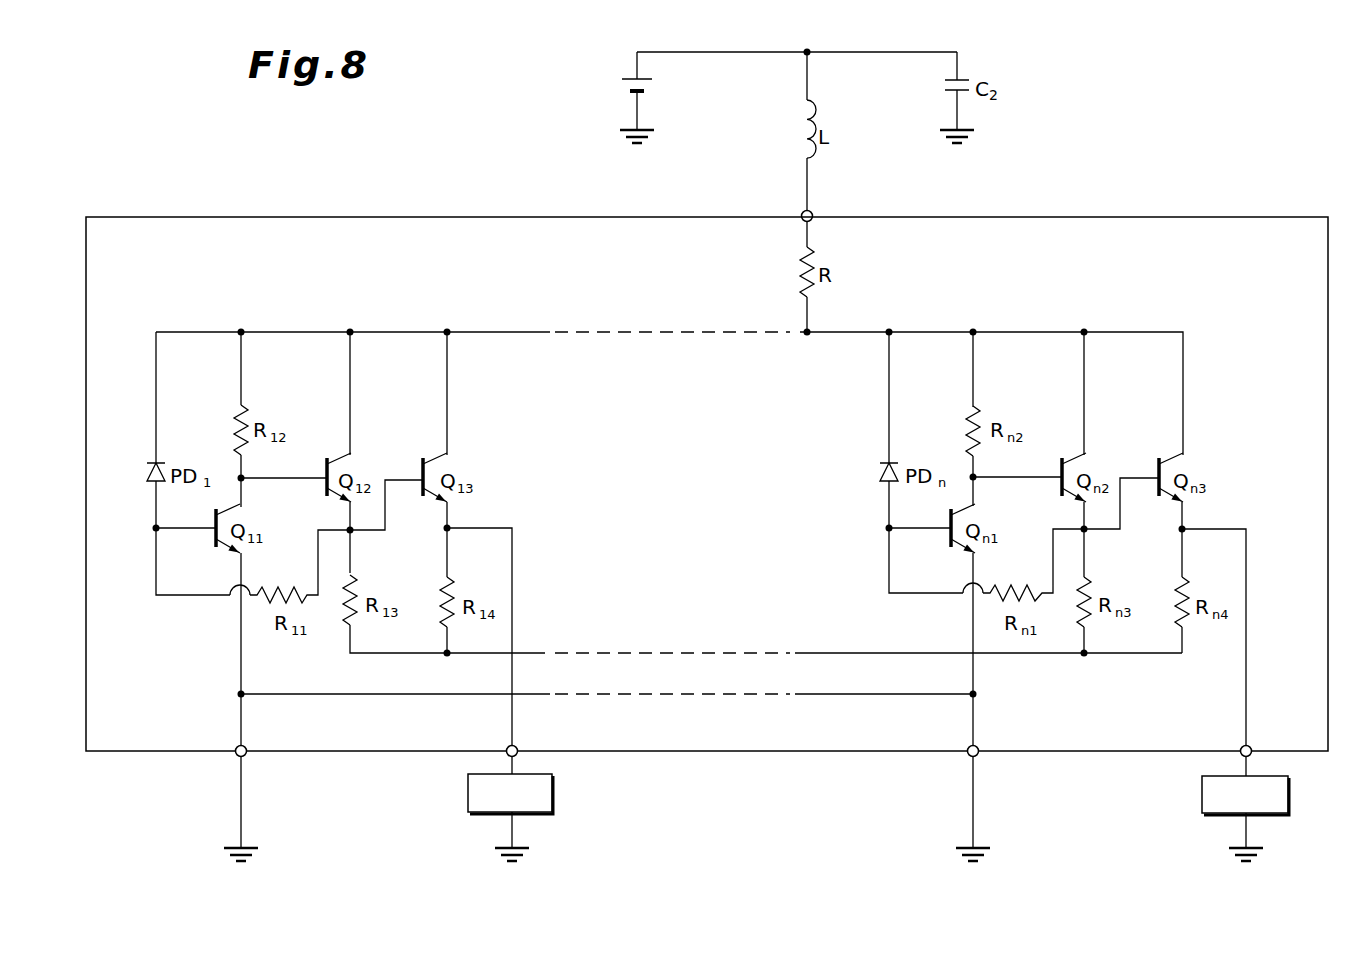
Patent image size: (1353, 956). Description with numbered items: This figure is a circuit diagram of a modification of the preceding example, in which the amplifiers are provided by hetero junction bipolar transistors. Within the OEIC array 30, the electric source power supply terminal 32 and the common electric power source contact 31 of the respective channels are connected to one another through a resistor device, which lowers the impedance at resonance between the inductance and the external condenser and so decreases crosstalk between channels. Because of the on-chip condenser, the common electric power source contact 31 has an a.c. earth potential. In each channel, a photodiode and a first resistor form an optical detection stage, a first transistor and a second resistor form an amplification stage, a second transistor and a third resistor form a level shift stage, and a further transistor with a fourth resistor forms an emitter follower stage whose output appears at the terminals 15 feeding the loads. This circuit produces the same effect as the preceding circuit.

The OEIC array 30 is at (1182, 218).
The common electric power source contact 31 is at (241, 330).
The electric source power supply terminal 32 is at (811, 211).
The output terminal 15 is at (516, 746).